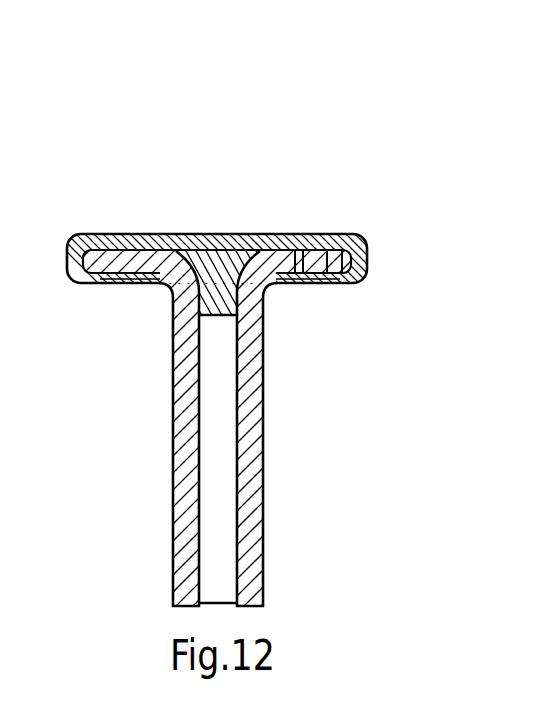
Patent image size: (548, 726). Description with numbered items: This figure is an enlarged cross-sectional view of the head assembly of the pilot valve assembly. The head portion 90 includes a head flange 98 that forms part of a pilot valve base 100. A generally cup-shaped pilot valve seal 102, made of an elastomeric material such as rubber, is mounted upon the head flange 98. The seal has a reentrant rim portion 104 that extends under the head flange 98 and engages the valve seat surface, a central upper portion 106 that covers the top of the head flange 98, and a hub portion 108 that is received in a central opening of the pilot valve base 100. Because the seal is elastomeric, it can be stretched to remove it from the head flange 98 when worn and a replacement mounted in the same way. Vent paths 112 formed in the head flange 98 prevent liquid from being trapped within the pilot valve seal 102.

The head portion 90 is at (100, 138).
The head flange 98 is at (73, 240).
The pilot valve base 100 is at (180, 325).
The pilot valve seal 102 is at (330, 233).
The reentrant rim portion 104 is at (333, 282).
The central upper portion 106 is at (160, 238).
The hub portion 108 is at (225, 312).
The vent paths 112 is at (313, 233).